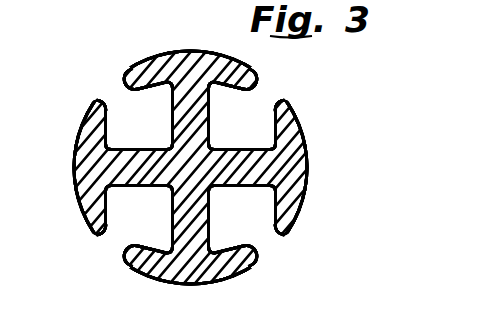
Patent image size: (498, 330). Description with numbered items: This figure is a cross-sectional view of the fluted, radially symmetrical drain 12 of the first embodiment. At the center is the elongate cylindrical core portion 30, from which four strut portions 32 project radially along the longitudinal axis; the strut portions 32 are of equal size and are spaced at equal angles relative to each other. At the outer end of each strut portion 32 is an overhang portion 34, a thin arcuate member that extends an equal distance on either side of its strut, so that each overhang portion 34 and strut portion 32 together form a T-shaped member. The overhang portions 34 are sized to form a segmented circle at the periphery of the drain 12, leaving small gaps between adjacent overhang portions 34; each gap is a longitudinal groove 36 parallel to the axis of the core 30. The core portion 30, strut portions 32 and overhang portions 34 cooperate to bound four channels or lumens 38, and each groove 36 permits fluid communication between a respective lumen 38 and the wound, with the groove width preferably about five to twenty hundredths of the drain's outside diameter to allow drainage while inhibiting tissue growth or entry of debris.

The drain 12 is at (304, 97).
The core portion 30 is at (168, 223).
The strut portions 32 is at (205, 50).
The overhang portions 34 is at (88, 193).
The longitudinal grooves 36 is at (127, 78).
The lumens 38 is at (125, 132).